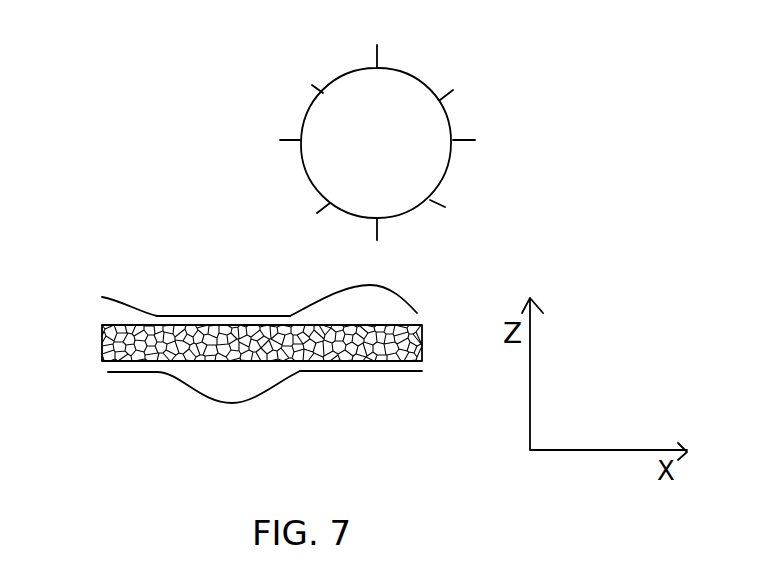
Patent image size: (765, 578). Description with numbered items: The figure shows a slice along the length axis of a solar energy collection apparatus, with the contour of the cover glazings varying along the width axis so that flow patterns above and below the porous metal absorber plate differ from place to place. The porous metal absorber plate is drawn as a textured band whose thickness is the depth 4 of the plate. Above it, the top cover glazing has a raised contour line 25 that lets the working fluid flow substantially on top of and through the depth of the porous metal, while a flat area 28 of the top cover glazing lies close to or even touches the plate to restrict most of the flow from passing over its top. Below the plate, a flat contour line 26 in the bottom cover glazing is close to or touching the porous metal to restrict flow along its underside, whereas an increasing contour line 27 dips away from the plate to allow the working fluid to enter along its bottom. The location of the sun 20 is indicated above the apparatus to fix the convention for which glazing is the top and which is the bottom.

The depth of the porous metal absorber plate 4 is at (93, 325).
The location of the sun 20 is at (461, 177).
The contour line in the top cover glazing 25 is at (138, 298).
The flat contour line in the bottom cover glazing 26 is at (133, 389).
The increasing contour line along the bottom cover glazing 27 is at (184, 406).
The flat area of the top cover glazing 28 is at (235, 303).